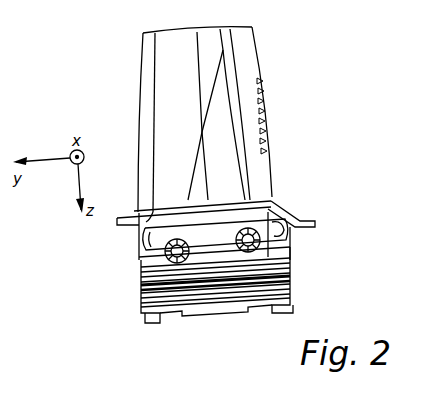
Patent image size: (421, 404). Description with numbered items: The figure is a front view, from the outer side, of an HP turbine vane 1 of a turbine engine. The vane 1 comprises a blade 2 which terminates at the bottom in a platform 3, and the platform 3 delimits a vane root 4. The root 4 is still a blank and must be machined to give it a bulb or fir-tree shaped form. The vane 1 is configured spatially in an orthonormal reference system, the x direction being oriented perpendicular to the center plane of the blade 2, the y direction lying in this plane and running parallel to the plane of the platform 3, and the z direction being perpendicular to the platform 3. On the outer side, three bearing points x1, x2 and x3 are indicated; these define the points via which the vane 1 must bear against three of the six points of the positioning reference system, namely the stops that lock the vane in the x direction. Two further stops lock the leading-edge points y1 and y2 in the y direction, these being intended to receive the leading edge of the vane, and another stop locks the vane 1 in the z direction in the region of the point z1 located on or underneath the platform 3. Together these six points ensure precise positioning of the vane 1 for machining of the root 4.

The HP turbine vane 1 is at (124, 51).
The blade 2 is at (245, 53).
The platform 3 is at (273, 190).
The vane root 4 is at (290, 267).
The bearing point X1 x1 is at (286, 240).
The bearing point X2 x2 is at (166, 251).
The bearing point X3 x3 is at (221, 47).
The locking point Y1 y1 is at (273, 167).
The locking point Y2 y2 is at (260, 65).
The locking point Z1 z1 is at (172, 198).